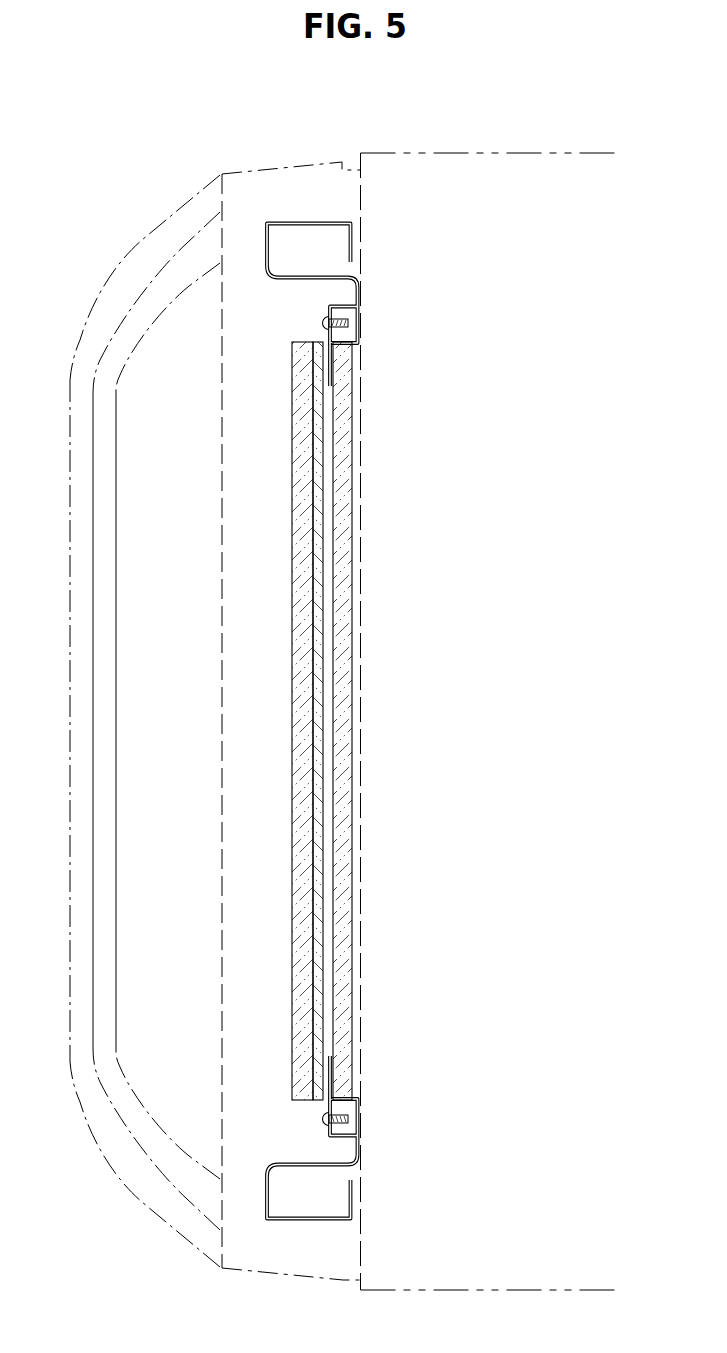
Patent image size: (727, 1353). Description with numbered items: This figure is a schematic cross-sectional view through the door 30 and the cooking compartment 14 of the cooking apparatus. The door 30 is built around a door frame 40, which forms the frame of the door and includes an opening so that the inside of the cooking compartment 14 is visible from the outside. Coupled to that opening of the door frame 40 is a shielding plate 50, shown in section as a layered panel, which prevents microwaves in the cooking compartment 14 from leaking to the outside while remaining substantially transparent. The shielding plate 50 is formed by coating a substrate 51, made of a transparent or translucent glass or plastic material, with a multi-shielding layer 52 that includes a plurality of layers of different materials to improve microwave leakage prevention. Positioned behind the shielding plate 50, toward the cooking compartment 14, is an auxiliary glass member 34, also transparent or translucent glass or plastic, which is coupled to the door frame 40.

The cooking compartment 14 is at (518, 719).
The door 30 is at (250, 170).
The auxiliary glass member 34 is at (346, 440).
The door frame 40 is at (297, 220).
The shielding plate 50 is at (222, 721).
The substrate 51 is at (302, 608).
The multi-shielding layer 52 is at (317, 535).